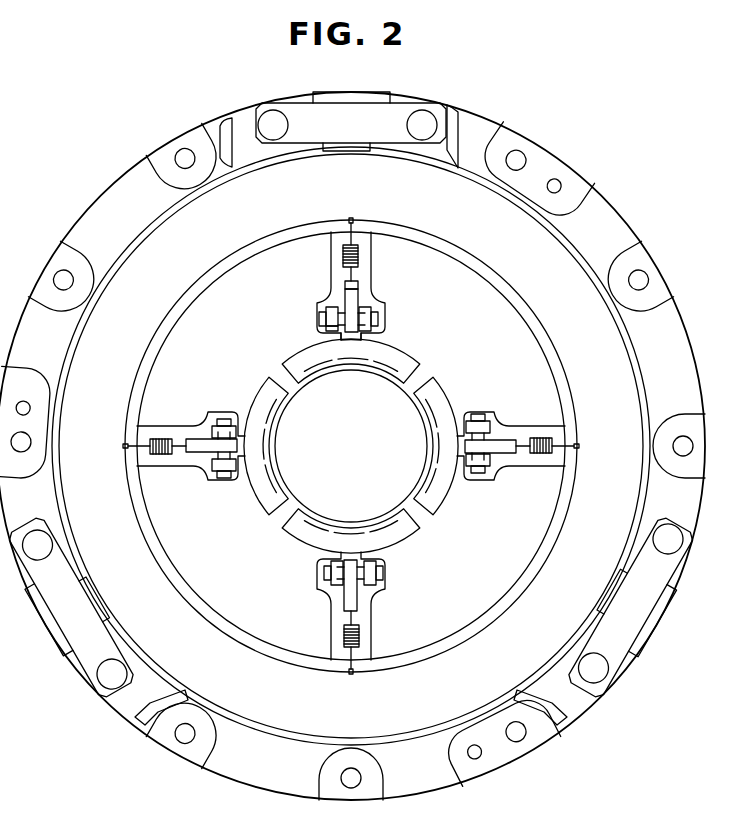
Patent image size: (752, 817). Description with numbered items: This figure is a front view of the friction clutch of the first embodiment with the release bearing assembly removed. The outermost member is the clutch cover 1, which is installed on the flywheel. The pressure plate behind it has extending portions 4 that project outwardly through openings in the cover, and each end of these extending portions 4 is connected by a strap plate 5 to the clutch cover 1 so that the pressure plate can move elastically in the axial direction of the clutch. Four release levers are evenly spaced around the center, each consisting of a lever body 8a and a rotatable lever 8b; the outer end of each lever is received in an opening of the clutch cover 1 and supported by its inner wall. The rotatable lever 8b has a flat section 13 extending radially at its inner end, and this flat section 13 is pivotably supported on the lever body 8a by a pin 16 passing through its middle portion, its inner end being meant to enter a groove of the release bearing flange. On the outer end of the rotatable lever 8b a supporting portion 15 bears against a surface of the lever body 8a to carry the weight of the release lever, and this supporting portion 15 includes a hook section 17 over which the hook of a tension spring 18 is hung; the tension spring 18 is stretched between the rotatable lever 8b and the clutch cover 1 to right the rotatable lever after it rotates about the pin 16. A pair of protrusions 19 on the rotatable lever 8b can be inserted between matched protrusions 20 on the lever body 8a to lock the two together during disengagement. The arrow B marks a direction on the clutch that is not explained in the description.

The clutch cover 1 is at (249, 123).
The extending portion 4 is at (438, 148).
The strap plate 5 is at (379, 118).
The lever body 8a is at (337, 260).
The rotatable lever 8b is at (398, 342).
The flat section 13 is at (405, 363).
The supporting portion 15 is at (344, 296).
The pin 16 is at (320, 318).
The hook section 17 is at (347, 285).
The tension spring 18 is at (371, 259).
The protrusions 19 is at (326, 310).
The matched protrusions 20 is at (327, 332).
The direction of rotation B is at (678, 643).